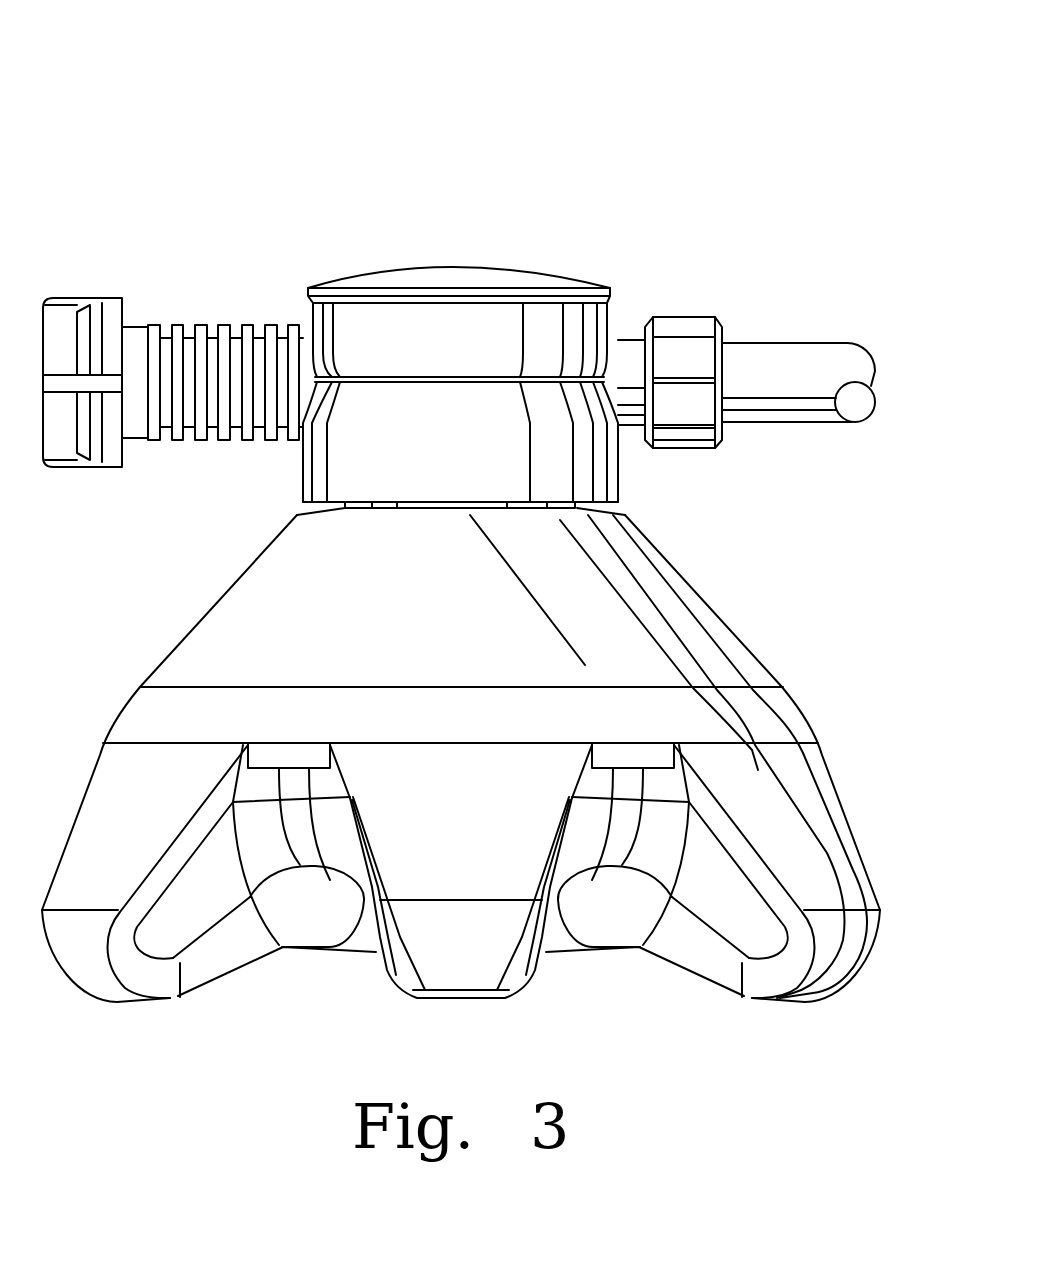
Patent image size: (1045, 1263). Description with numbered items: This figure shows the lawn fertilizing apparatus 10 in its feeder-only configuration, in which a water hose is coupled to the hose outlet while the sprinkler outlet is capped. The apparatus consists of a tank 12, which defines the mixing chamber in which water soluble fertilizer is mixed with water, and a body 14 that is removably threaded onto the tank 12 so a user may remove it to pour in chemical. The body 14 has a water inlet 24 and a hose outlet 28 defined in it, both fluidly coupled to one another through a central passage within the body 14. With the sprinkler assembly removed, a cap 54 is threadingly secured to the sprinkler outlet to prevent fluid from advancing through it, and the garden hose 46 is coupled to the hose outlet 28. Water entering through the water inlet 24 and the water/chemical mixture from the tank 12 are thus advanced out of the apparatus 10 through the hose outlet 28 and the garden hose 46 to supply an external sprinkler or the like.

The lawn fertilizing apparatus 10 is at (642, 108).
The tank 12 is at (823, 812).
The body 14 is at (605, 481).
The water inlet 24 is at (140, 333).
The hose outlet 28 is at (630, 345).
The garden hose 46 is at (800, 358).
The cap 54 is at (482, 282).